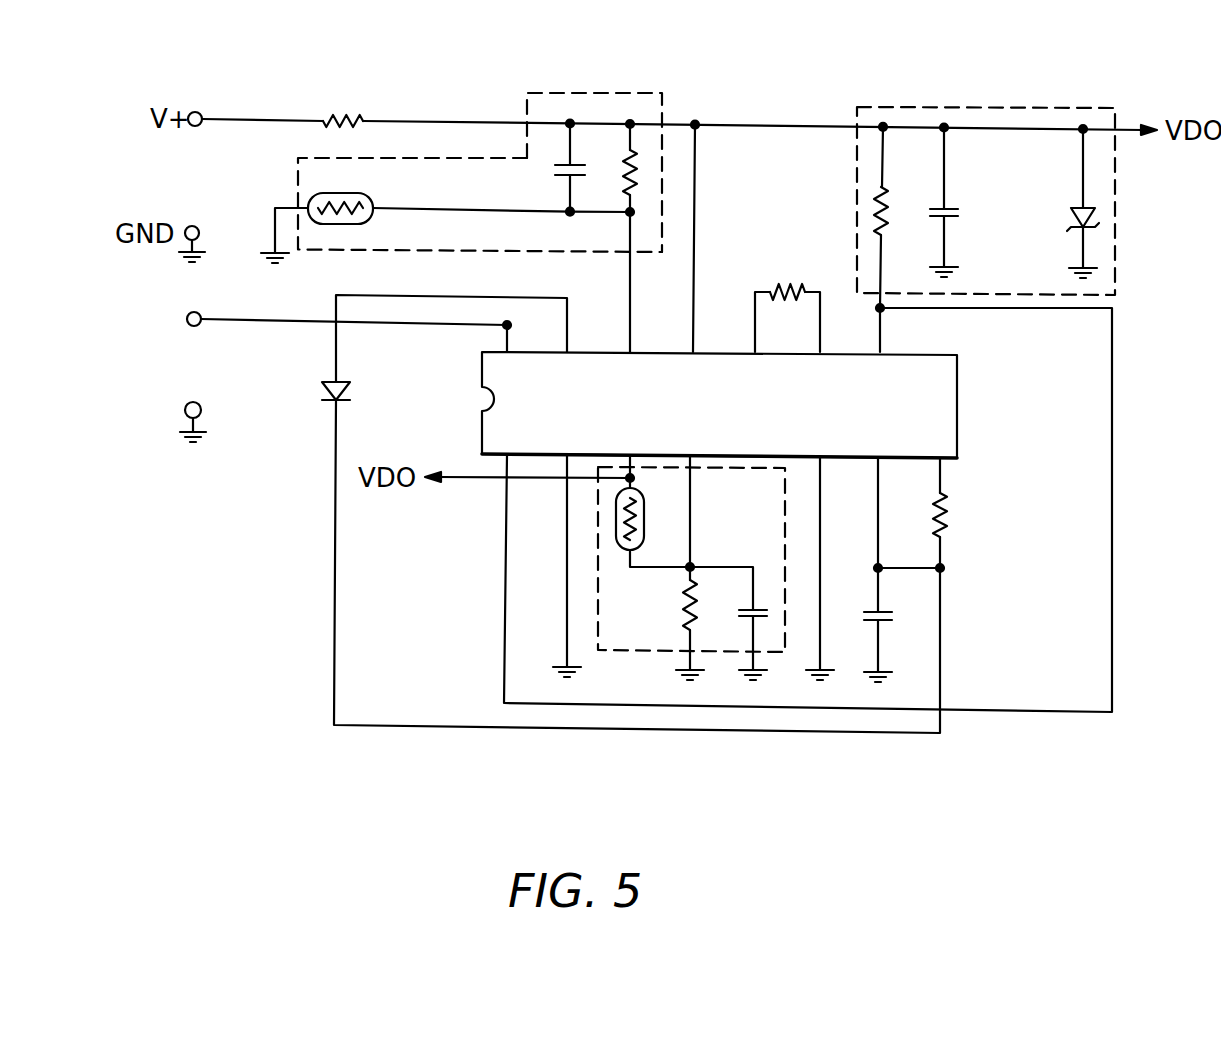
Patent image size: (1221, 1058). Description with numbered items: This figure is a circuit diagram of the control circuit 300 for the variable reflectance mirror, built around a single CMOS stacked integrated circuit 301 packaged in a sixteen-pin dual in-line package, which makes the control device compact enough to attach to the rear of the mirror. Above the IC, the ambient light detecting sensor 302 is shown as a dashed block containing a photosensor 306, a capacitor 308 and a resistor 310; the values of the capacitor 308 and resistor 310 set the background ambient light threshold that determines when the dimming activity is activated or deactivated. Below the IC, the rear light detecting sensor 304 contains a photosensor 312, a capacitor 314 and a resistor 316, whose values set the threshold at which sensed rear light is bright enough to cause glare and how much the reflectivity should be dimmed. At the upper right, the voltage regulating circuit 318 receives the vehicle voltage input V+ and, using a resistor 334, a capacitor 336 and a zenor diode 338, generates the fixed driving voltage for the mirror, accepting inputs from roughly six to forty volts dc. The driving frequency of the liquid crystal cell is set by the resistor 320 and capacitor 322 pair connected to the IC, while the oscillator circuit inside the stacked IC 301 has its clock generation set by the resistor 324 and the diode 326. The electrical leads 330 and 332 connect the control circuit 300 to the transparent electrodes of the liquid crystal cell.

The control circuit 300 is at (1002, 748).
The CMOS stacked integrated circuit 301 is at (958, 420).
The ambient light detecting sensor 302 is at (650, 93).
The rear light detecting sensor 304 is at (604, 665).
The photosensor 306 is at (372, 222).
The capacitor 308 is at (553, 170).
The resistor 310 is at (636, 175).
The photosensor 312 is at (603, 540).
The capacitor 314 is at (745, 613).
The resistor 316 is at (688, 605).
The voltage regulating circuit 318 is at (968, 104).
The resistor 320 is at (942, 514).
The capacitor 322 is at (887, 615).
The resistor 324 is at (806, 256).
The diode 326 is at (350, 390).
The electrical lead 330 is at (187, 318).
The electrical lead 332 is at (190, 400).
The resistor 334 is at (872, 211).
The capacitor 336 is at (960, 212).
The zenor diode 338 is at (1072, 220).